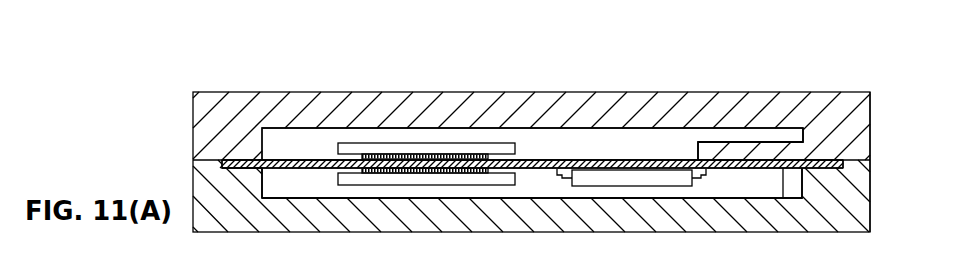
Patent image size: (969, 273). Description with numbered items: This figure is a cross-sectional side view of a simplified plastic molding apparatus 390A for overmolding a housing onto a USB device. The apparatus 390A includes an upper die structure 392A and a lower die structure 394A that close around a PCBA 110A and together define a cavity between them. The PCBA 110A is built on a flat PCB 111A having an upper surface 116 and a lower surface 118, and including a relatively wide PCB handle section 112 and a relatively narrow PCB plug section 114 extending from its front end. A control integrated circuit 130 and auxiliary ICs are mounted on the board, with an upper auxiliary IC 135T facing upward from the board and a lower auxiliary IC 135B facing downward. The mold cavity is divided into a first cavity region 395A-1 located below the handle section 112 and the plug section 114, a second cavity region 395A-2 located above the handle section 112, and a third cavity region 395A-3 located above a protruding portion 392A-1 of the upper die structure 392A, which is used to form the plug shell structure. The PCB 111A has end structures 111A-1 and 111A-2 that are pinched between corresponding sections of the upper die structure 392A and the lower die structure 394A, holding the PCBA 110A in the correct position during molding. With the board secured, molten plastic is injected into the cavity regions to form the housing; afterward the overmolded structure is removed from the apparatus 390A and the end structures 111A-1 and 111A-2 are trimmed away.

The plastic molding apparatus 390A is at (176, 17).
The upper die structure 392A is at (267, 83).
The lower die structure 394A is at (190, 179).
The protruding portion of upper die structure 392A-1 is at (774, 152).
The PCBA 110A is at (335, 195).
The upper surface 116 is at (323, 150).
The lower surface 118 is at (541, 179).
The PCB handle section 112 is at (362, 156).
The upper auxiliary IC 135T is at (437, 147).
The lower auxiliary IC 135B is at (432, 181).
The second cavity region 395A-2 is at (563, 148).
The third cavity region 395A-3 is at (718, 133).
The PCB plug section 114 is at (730, 157).
The control integrated circuit 130 is at (633, 182).
The first cavity region 395A-1 is at (713, 190).
The end structure 111A-1 is at (240, 168).
The PCB 111A is at (785, 171).
The end structure 111A-2 is at (820, 173).